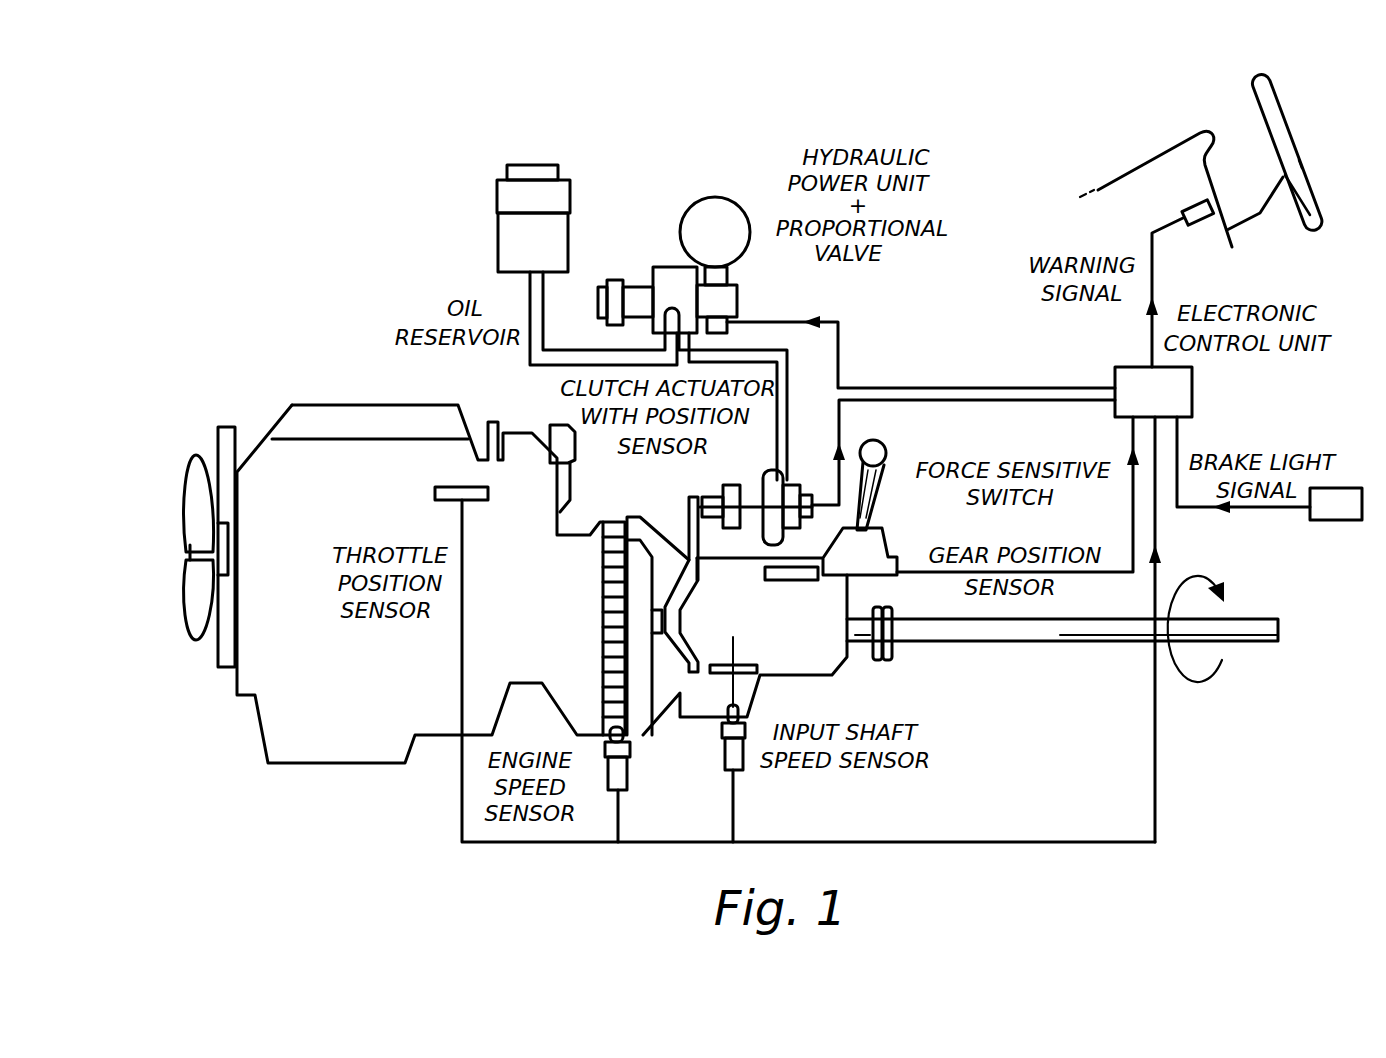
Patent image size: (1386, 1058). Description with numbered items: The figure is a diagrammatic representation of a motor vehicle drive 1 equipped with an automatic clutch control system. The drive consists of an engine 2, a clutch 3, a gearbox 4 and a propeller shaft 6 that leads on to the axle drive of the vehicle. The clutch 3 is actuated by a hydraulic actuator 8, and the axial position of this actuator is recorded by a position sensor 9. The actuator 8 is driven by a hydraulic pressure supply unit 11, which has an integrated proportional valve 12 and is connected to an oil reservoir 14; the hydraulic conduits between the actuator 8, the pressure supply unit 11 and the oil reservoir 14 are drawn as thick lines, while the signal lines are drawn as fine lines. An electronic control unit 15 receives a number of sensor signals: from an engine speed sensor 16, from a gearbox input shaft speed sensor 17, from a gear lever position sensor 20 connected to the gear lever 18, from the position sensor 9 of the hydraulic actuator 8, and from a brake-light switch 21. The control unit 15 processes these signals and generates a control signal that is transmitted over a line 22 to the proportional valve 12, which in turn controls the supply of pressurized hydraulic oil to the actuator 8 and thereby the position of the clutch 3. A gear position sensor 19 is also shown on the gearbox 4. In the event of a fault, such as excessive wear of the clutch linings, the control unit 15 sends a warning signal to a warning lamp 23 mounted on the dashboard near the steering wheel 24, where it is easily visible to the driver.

The motor vehicle drive 1 is at (352, 278).
The engine 2 is at (332, 737).
The clutch 3 is at (635, 697).
The gearbox 4 is at (820, 652).
The propeller shaft 6 is at (1252, 630).
The hydraulic actuator 8 is at (770, 538).
The position sensor 9 is at (812, 487).
The hydraulic pressure supply unit 11 is at (670, 275).
The proportional valve 12 is at (715, 318).
The oil reservoir 14 is at (558, 197).
The electronic control unit 15 is at (1192, 395).
The engine speed sensor 16 is at (622, 776).
The gearbox input shaft speed sensor 17 is at (743, 760).
The gear lever 18 is at (872, 497).
The gear position sensor 19 is at (792, 580).
The gear lever position sensor 20 is at (875, 448).
The brake-light switch 21 is at (1340, 513).
The line 22 is at (915, 383).
The warning lamp 23 is at (1200, 200).
The steering wheel 24 is at (1272, 112).